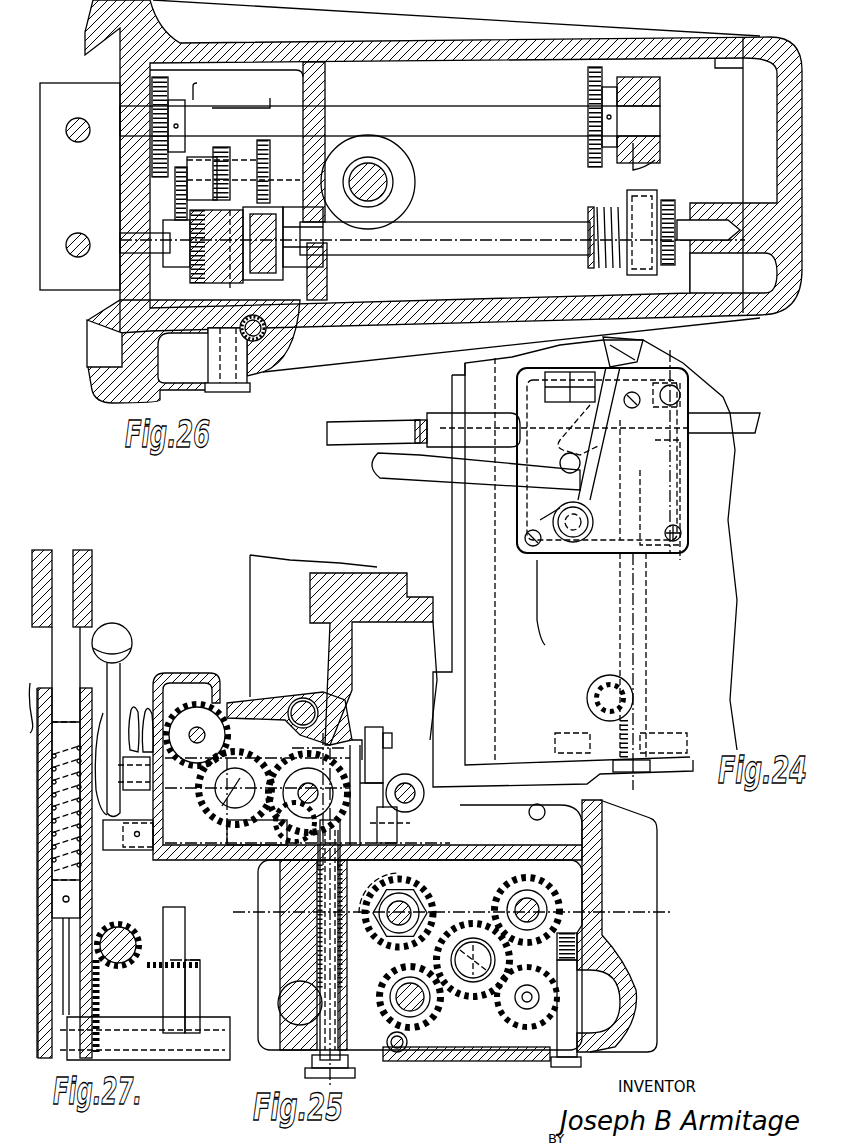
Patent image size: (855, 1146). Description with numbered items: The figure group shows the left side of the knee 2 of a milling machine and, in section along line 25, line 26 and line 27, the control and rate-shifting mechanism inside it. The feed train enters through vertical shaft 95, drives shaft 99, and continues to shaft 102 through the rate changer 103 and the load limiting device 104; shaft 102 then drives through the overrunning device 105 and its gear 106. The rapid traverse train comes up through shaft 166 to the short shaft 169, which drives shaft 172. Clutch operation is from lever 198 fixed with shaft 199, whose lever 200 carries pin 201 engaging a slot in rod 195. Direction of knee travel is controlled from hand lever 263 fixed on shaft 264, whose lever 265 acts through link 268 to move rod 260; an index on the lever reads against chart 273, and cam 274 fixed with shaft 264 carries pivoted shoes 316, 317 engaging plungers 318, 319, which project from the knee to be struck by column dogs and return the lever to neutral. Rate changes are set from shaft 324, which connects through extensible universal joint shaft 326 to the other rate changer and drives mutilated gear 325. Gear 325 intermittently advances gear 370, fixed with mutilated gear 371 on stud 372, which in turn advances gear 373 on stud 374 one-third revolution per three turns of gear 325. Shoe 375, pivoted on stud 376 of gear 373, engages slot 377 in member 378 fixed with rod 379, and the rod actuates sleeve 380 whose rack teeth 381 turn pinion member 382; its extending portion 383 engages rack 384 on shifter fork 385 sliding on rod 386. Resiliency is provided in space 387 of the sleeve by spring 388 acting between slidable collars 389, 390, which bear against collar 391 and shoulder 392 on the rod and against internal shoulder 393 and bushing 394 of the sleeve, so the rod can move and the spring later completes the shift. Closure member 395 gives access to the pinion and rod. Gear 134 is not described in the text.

In FIG. 26, the knee 2 is at (372, 350).
In FIG. 26, the section line 25— 25 is at (405, 178).
In FIG. 24, the section line 25— 25 is at (645, 345).
In FIG. 25, the section line 26— 26 is at (673, 937).
In FIG. 25, the section line 27— 27 is at (292, 748).
In FIG. 26, the vertical shaft 95 is at (88, 232).
In FIG. 25, the shaft 99 is at (412, 990).
In FIG. 26, the shaft 102 is at (512, 242).
In FIG. 26, the rate changer 103 is at (173, 189).
In FIG. 25, the rate changer 103 is at (483, 1017).
In FIG. 26, the load limiting device 104 is at (292, 296).
In FIG. 26, the overrunning device 105 is at (619, 264).
In FIG. 26, the gear 106 is at (673, 265).
In FIG. 25, the gear 134 is at (478, 950).
In FIG. 26, the shaft 166 is at (78, 143).
In FIG. 25, the short shaft 169 is at (527, 1005).
In FIG. 26, the shaft 172 is at (492, 111).
In FIG. 25, the shaft 172 is at (526, 908).
In FIG. 25, the rod 195 is at (390, 745).
In FIG. 24, the lever 198 is at (622, 370).
In FIG. 27, the lever 198 is at (124, 672).
In FIG. 25, the shaft 199 is at (395, 815).
In FIG. 25, the lever 200 is at (397, 835).
In FIG. 25, the pin 201 is at (405, 785).
In FIG. 25, the rod 260 is at (543, 816).
In FIG. 24, the hand lever 263 is at (466, 478).
In FIG. 27, the hand lever 263 is at (104, 720).
In FIG. 24, the shaft 264 is at (560, 463).
In FIG. 25, the shaft 264 is at (320, 700).
In FIG. 25, the lever 265 is at (352, 730).
In FIG. 25, the link 268 is at (374, 727).
In FIG. 24, the chart 273 is at (540, 400).
In FIG. 24, the cam 274 is at (585, 563).
In FIG. 24, the shoe 316 is at (560, 430).
In FIG. 24, the shoe 317 is at (562, 505).
In FIG. 24, the plunger 318 is at (450, 415).
In FIG. 24, the plunger 319 is at (453, 490).
In FIG. 24, the shaft 324 is at (738, 438).
In FIG. 24, the gear 325 is at (682, 403).
In FIG. 25, the gear 325 is at (199, 722).
In FIG. 24, the extensible universal joint shaft 326 is at (383, 420).
In FIG. 25, the gear 370 is at (208, 786).
In FIG. 25, the gear 371 is at (222, 796).
In FIG. 25, the stud 372 is at (228, 812).
In FIG. 25, the gear 373 is at (272, 762).
In FIG. 25, the stud 374 is at (330, 758).
In FIG. 25, the shoe 375 is at (288, 845).
In FIG. 25, the stud 376 is at (300, 865).
In FIG. 25, the slot 377 is at (255, 850).
In FIG. 27, the member 378 is at (83, 555).
In FIG. 25, the member 378 is at (395, 907).
In FIG. 26, the rod 379 is at (287, 335).
In FIG. 24, the rod 379 is at (650, 592).
In FIG. 27, the rod 379 is at (57, 640).
In FIG. 25, the rod 379 is at (318, 907).
In FIG. 27, the sleeve 380 is at (94, 861).
In FIG. 25, the sleeve 380 is at (290, 1022).
In FIG. 27, the rack teeth 381 is at (100, 996).
In FIG. 26, the pinion member 382 is at (203, 342).
In FIG. 27, the pinion member 382 is at (148, 962).
In FIG. 26, the extending portion 383 is at (245, 295).
In FIG. 27, the extending portion 383 is at (148, 935).
In FIG. 25, the extending portion 383 is at (403, 984).
In FIG. 27, the rack 384 is at (185, 958).
In FIG. 25, the rack 384 is at (390, 1050).
In FIG. 24, the shifter fork 385 is at (596, 704).
In FIG. 27, the shifter fork 385 is at (172, 981).
In FIG. 25, the shifter fork 385 is at (408, 1040).
In FIG. 24, the rod 386 is at (560, 728).
In FIG. 27, the rod 386 is at (216, 1047).
In FIG. 25, the rod 386 is at (385, 1040).
In FIG. 27, the space 387 is at (85, 870).
In FIG. 27, the spring 388 is at (84, 884).
In FIG. 27, the slidable collar 389 is at (90, 900).
In FIG. 27, the slidable collar 390 is at (45, 693).
In FIG. 27, the collar 391 is at (72, 954).
In FIG. 27, the shoulder 392 is at (67, 789).
In FIG. 27, the internal shoulder 393 is at (95, 958).
In FIG. 27, the bushing 394 is at (90, 660).
In FIG. 24, the closure member 395 is at (603, 680).